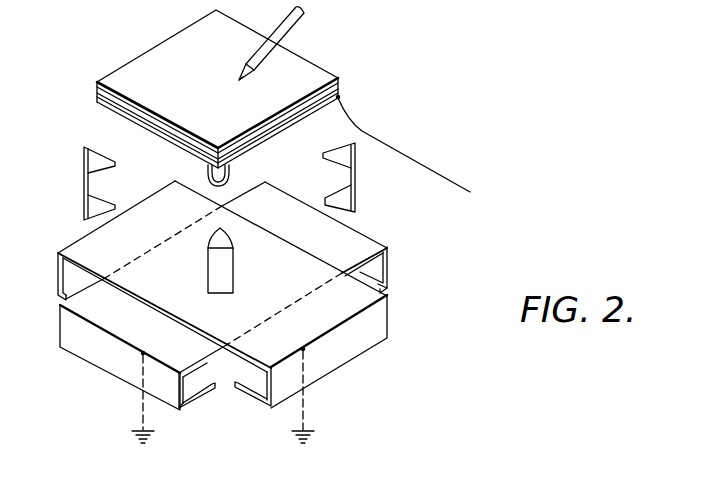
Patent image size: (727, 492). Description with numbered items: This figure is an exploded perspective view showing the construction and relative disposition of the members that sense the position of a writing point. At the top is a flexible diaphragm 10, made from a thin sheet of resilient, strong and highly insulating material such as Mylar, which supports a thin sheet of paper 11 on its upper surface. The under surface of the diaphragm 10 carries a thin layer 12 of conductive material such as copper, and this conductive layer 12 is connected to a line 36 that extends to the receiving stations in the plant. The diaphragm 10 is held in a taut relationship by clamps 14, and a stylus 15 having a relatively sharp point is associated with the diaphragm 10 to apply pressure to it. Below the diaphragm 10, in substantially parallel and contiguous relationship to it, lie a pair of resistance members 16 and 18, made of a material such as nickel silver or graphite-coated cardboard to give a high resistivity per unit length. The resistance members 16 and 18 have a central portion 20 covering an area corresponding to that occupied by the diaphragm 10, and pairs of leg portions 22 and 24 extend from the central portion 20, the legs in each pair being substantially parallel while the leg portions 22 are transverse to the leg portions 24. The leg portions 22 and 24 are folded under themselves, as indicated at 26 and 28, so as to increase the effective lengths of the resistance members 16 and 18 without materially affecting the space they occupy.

The flexible diaphragm 10 is at (162, 128).
The sheet of paper 11 is at (170, 55).
The layer of conductive material 12 is at (121, 115).
The clamps 14 is at (232, 164).
The stylus 15 is at (291, 26).
The resistance member 16 is at (357, 356).
The resistance member 18 is at (99, 368).
The central portion 20 is at (186, 293).
The leg portions 22 is at (85, 243).
The leg portions 24 is at (88, 318).
The folded-under portion 26 is at (87, 284).
The folded-under portion 28 is at (365, 273).
The line 36 is at (423, 166).